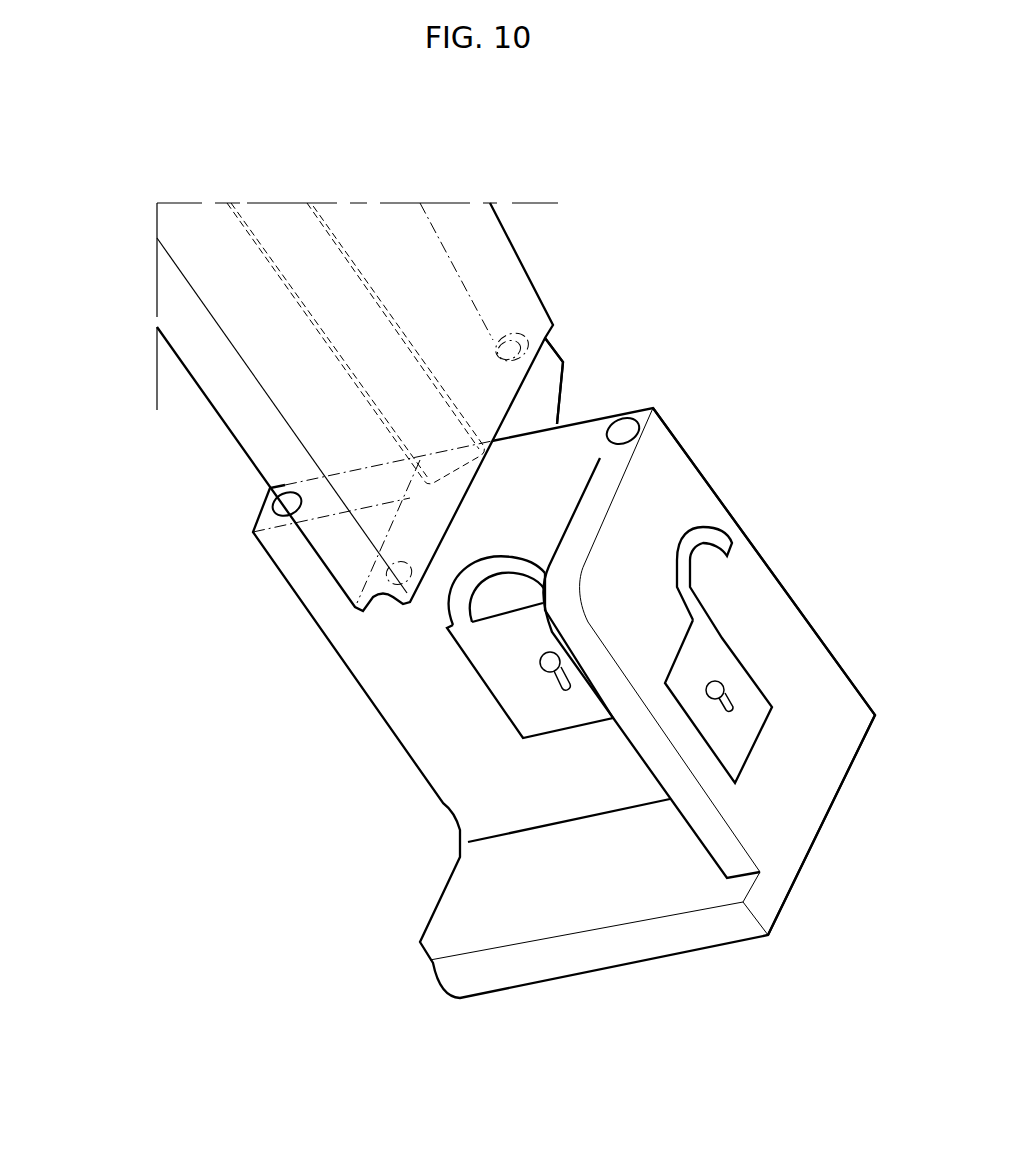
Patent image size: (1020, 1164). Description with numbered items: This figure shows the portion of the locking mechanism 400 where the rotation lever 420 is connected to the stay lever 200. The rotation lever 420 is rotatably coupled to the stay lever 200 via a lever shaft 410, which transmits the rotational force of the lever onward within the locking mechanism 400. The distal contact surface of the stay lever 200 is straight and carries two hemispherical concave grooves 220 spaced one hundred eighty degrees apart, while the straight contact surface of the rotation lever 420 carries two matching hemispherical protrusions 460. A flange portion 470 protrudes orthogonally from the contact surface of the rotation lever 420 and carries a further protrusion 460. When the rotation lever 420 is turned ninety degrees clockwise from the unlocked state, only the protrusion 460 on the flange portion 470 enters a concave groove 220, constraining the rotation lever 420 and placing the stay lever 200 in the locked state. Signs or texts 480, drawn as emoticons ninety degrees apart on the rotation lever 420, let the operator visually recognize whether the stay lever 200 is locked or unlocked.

The stay lever 200 is at (178, 292).
The lever shaft 410 is at (340, 243).
The concave groove 220 is at (567, 343).
The locking mechanism 400 is at (423, 903).
The rotation lever 420 is at (790, 638).
The hemispherical protrusion 460 is at (517, 335).
The flange portion 470 is at (548, 380).
The signs or texts 480 is at (711, 650).